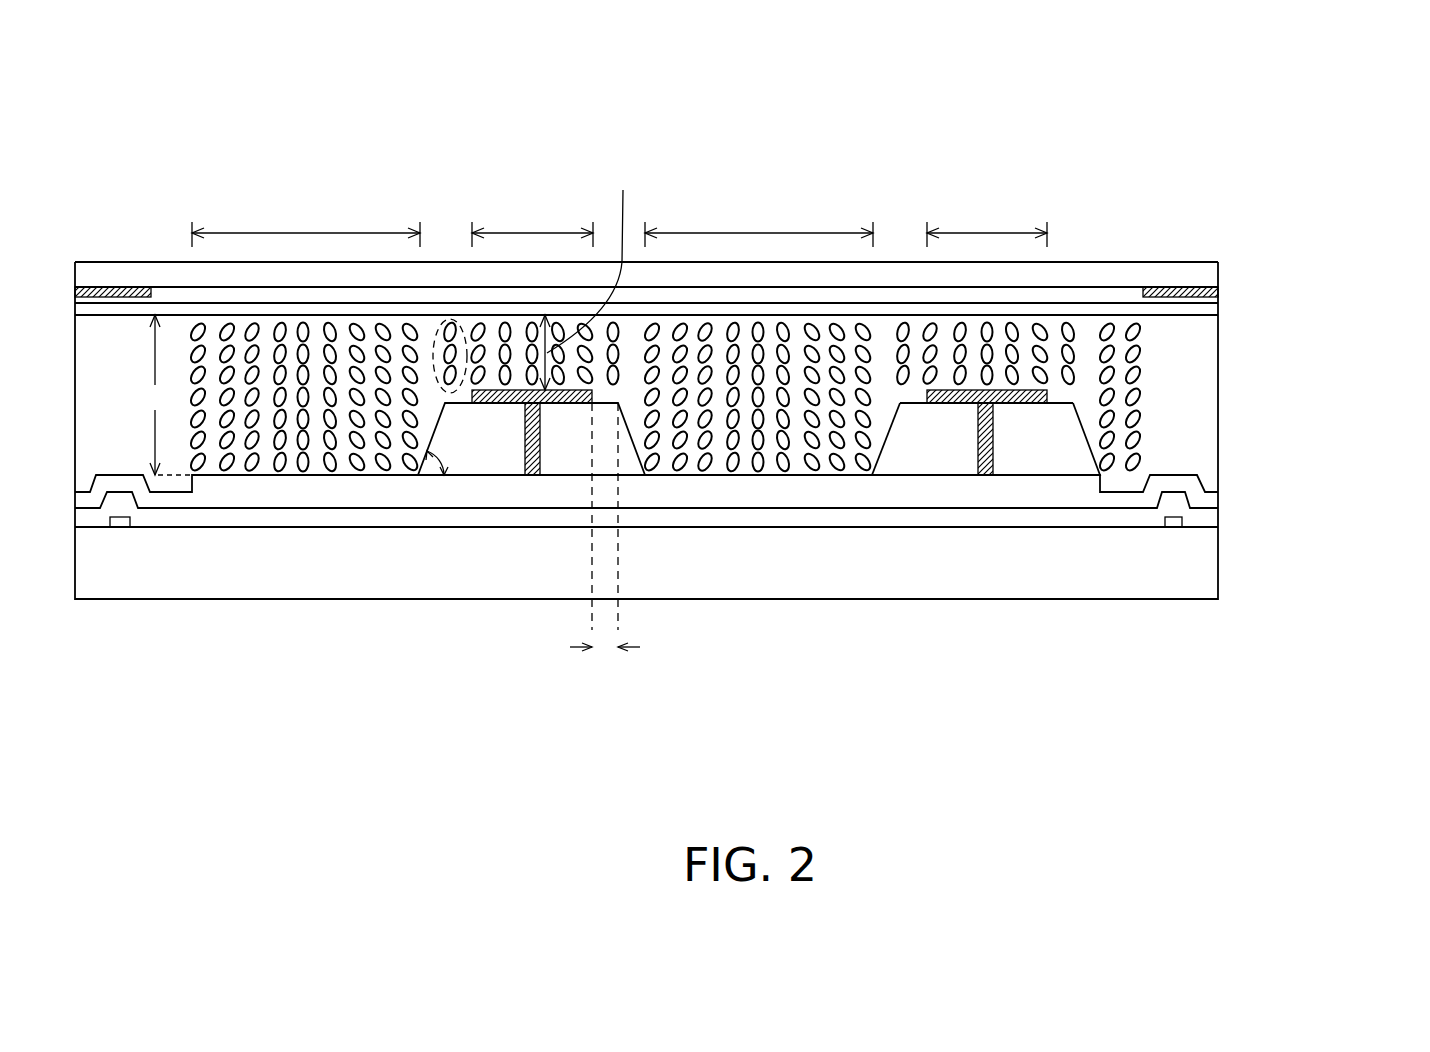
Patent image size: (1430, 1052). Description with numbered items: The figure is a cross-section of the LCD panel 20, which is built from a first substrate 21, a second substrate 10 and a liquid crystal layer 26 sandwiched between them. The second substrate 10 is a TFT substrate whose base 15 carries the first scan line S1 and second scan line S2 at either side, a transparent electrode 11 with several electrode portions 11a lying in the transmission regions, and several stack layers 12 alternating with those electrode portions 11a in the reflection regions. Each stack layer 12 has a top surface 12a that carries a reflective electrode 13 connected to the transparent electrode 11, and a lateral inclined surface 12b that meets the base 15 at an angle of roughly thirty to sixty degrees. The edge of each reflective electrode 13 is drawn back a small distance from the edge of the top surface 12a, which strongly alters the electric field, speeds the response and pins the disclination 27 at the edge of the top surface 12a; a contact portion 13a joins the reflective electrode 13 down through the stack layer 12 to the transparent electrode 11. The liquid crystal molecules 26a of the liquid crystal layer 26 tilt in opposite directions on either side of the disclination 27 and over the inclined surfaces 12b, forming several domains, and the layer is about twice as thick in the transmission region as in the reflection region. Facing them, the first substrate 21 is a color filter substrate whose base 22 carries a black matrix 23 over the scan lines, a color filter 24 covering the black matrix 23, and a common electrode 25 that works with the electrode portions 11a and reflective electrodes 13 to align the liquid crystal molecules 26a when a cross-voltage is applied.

The second substrate 10 is at (1218, 599).
The transparent electrode 11 is at (1082, 483).
The electrode portions 11a is at (777, 480).
The stack layers 12 is at (950, 462).
The top surface 12a is at (910, 405).
The lateral inclined surface 12b is at (878, 460).
The reflective electrodes 13 is at (1027, 405).
The contact portion of pixel electrode 13a is at (993, 458).
The base 15 is at (1208, 570).
The LCD panel 20 is at (1388, 101).
The first substrate 21 is at (1195, 250).
The base 22 is at (1220, 263).
The black matrix 23 is at (1220, 288).
The color filter 24 is at (1112, 296).
The common electrode 25 is at (1220, 315).
The liquid crystal layer 26 is at (1220, 425).
The liquid crystal molecules 26a is at (1141, 463).
The disclination 27 is at (455, 392).
The first scan line S1 is at (122, 527).
The second scan line S2 is at (1173, 527).